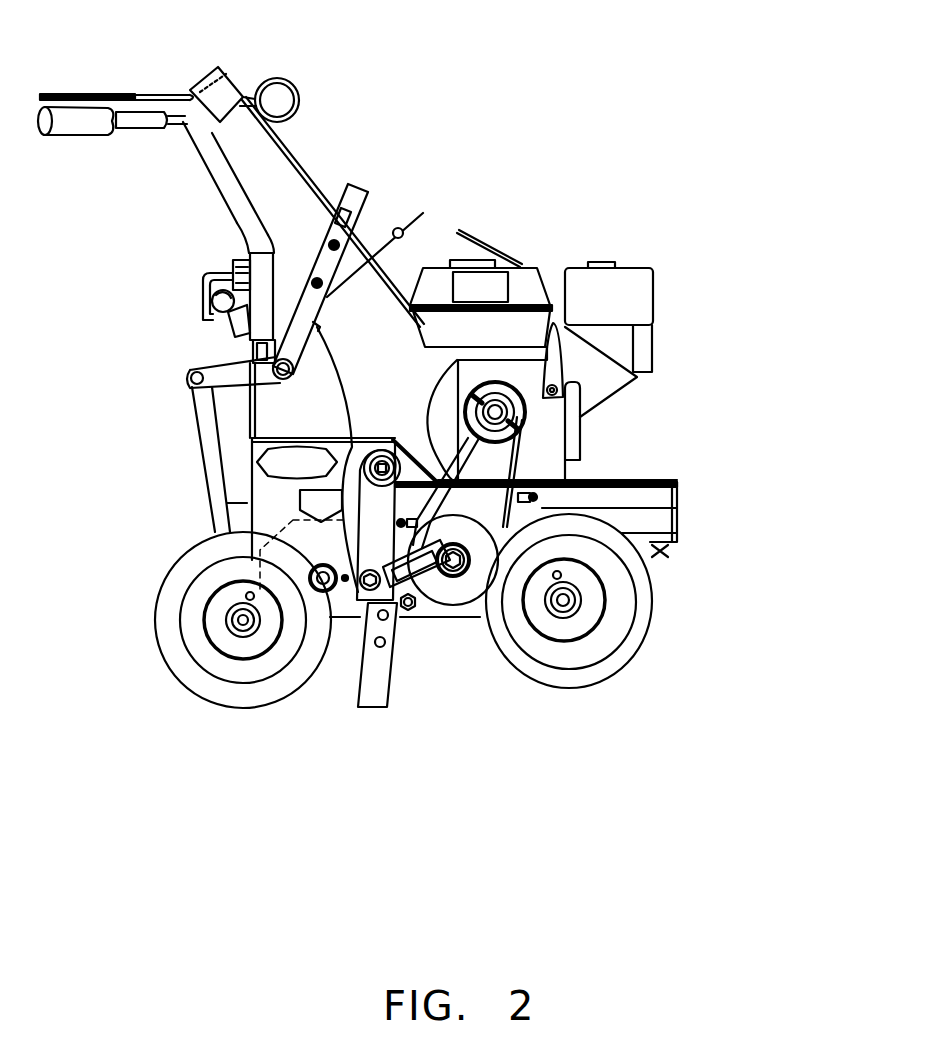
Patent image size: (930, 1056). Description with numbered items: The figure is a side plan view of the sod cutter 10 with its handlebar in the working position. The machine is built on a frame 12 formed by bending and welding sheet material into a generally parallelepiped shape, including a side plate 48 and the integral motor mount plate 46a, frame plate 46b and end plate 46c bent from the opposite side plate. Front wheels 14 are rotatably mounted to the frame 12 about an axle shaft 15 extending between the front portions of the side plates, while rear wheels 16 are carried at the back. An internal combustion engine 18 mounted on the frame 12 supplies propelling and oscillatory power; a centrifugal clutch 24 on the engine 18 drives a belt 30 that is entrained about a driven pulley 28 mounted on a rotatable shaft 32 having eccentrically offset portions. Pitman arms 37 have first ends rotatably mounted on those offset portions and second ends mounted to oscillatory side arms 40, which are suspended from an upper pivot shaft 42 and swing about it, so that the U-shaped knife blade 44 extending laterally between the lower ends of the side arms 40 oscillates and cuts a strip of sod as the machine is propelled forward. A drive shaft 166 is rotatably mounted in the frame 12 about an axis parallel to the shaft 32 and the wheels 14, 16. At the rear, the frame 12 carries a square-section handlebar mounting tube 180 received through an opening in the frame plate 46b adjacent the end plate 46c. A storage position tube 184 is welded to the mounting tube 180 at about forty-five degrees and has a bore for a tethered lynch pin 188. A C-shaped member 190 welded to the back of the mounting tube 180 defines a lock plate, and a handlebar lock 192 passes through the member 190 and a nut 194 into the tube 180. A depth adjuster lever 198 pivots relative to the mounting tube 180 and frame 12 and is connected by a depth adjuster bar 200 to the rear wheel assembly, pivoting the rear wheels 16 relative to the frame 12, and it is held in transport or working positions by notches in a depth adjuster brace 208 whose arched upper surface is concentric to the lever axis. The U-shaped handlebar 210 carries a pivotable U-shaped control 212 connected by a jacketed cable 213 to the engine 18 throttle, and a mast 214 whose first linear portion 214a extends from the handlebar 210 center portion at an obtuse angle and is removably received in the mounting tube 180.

The sod cutter 10 is at (545, 78).
The frame 12 is at (680, 497).
The front wheels 14 is at (625, 648).
The axle shaft 15 is at (563, 608).
The rear wheels 16 is at (165, 638).
The internal combustion engine 18 is at (637, 290).
The centrifugal clutch 24 is at (515, 410).
The driven pulley 28 is at (458, 588).
The belt 30 is at (580, 457).
The rotatable shaft 32 is at (470, 612).
The pitman arms 37 is at (427, 577).
The oscillatory side arms 40 is at (345, 455).
The upper pivot shaft 42 is at (382, 465).
The U-shaped knife blade 44 is at (373, 692).
The motor mount plate 46a is at (653, 480).
The frame plate 46b is at (275, 432).
The end plate 46c is at (257, 477).
The side plate 48 is at (660, 552).
The drive shaft 166 is at (308, 530).
The handlebar mounting tube 180 is at (263, 270).
The storage position tube 184 is at (225, 333).
The lynch pin 188 is at (212, 303).
The C-shaped member 190 is at (242, 247).
The handlebar lock 192 is at (205, 274).
The nut 194 is at (235, 260).
The depth adjuster lever 198 is at (362, 203).
The depth adjuster bar 200 is at (205, 427).
The depth adjuster brace 208 is at (350, 372).
The U-shaped handlebar 210 is at (132, 122).
The U-shaped control 212 is at (158, 95).
The jacketed cable 213 is at (295, 175).
The mast 214 is at (213, 167).
The first linear portion 214a is at (230, 193).